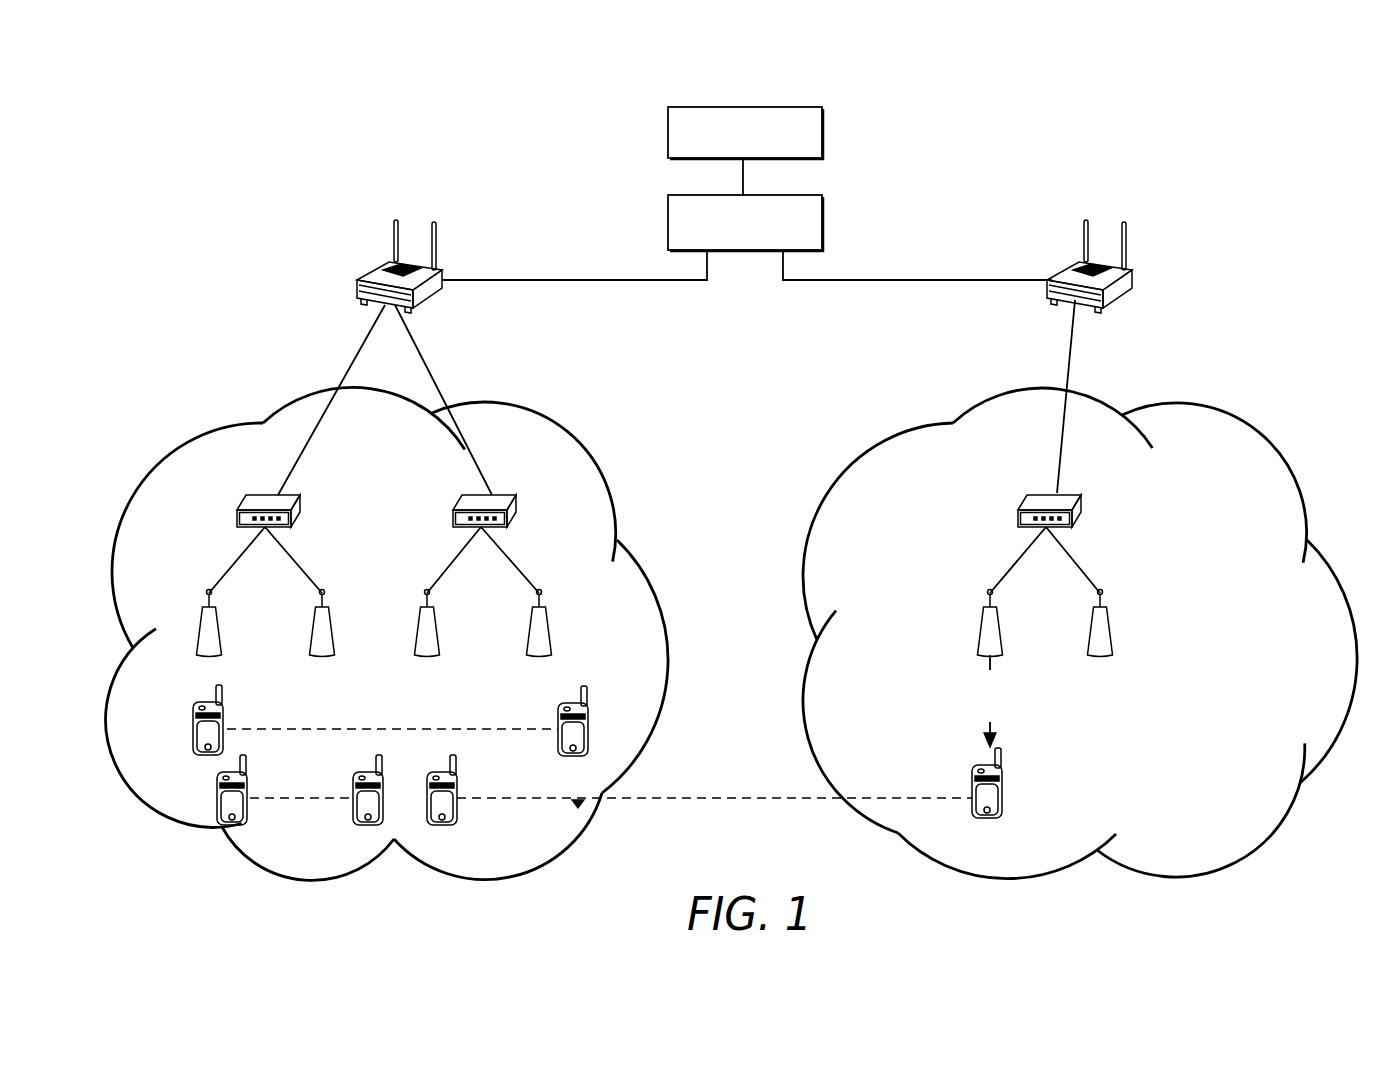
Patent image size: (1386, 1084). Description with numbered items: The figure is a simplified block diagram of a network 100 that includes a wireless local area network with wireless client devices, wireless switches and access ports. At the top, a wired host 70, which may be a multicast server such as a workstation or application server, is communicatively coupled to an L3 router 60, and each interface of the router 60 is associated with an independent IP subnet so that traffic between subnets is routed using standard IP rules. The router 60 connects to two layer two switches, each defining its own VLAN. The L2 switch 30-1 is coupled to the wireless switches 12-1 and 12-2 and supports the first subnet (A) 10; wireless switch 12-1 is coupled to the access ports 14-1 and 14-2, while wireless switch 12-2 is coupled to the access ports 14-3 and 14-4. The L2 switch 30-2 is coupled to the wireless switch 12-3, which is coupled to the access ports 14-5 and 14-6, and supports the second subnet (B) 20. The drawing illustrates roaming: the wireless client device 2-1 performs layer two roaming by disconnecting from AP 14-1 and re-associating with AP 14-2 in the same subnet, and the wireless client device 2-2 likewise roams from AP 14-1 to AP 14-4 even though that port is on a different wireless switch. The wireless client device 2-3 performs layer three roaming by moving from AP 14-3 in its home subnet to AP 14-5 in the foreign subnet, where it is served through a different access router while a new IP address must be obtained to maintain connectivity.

The network 100 is at (250, 112).
The first subnet (A) 10 is at (566, 431).
The second subnet (B) 20 is at (1256, 431).
The L2 switch 30-1 is at (370, 267).
The L2 switch 30-2 is at (1058, 267).
The wired host 70 is at (668, 131).
The L3 router 60 is at (668, 221).
The wireless switch 12-1 is at (243, 498).
The wireless switch 12-2 is at (459, 498).
The wireless switch 12-3 is at (1024, 498).
The access port 14-1 is at (222, 628).
The access port 14-2 is at (335, 628).
The access port 14-3 is at (440, 628).
The access port 14-4 is at (552, 628).
The access port 14-5 is at (1003, 628).
The access port 14-6 is at (1113, 628).
The wireless client device 2-1 is at (376, 771).
The wireless client device 2-2 is at (216, 700).
The wireless client device 2-3 is at (457, 815).